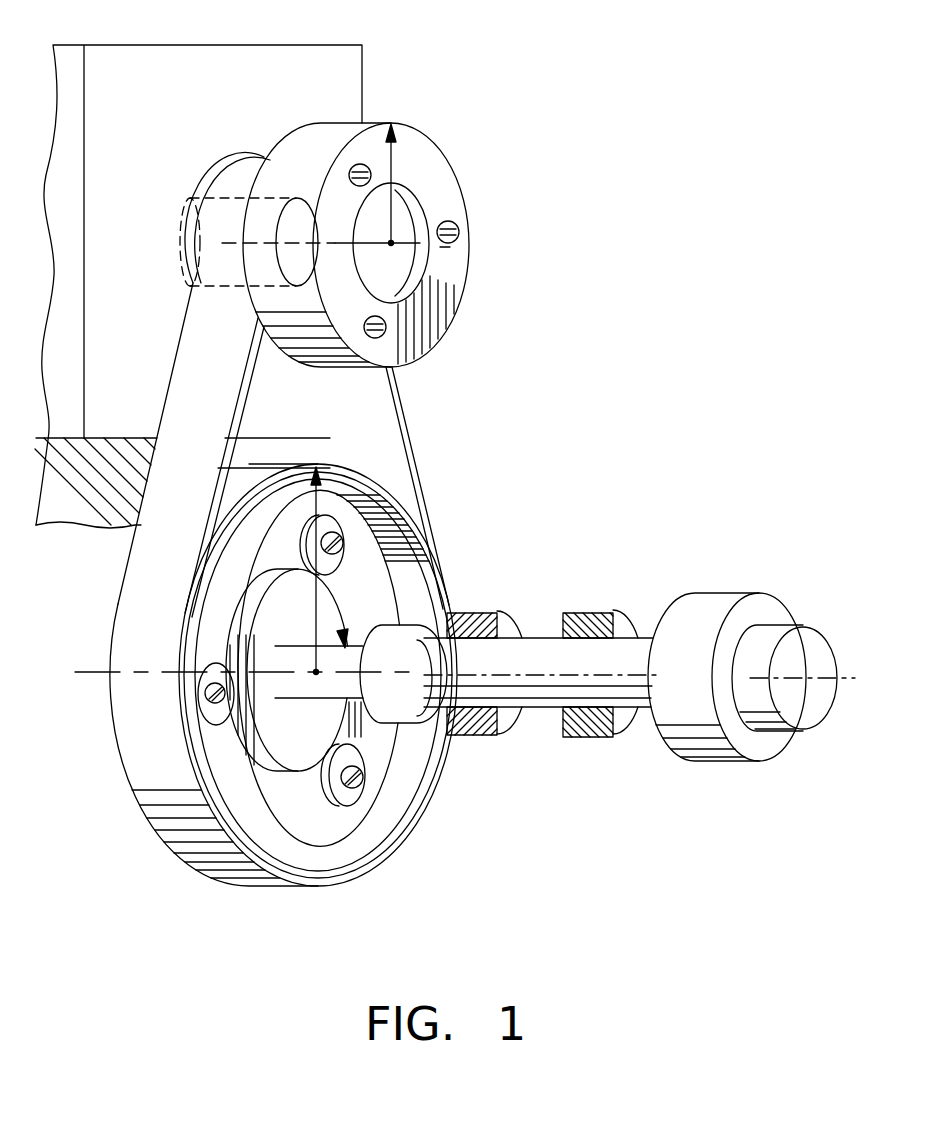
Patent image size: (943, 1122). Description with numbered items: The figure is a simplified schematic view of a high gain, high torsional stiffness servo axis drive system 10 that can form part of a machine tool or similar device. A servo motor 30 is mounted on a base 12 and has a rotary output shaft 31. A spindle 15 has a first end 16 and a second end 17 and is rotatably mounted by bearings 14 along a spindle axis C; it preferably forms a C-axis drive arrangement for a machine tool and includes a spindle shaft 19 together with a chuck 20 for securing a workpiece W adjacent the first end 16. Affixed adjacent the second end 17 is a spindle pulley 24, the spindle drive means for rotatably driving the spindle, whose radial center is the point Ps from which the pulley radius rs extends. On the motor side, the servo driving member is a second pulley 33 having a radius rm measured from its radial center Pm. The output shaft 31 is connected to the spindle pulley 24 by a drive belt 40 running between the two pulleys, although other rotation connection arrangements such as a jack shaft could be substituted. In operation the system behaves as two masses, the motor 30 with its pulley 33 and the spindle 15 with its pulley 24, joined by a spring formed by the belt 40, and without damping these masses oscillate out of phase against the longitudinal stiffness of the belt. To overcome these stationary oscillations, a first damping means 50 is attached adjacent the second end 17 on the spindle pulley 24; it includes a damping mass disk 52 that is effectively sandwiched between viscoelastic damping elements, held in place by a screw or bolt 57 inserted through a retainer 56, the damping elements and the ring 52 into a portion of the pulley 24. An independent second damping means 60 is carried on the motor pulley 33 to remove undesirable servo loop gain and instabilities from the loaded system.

The servo axis drive system 10 is at (530, 514).
The base 12 is at (112, 517).
The bearings 14 is at (486, 736).
The spindle 15 is at (544, 745).
The first end 16 is at (648, 598).
The second end 17 is at (343, 625).
The spindle shaft 19 is at (541, 643).
The chuck 20 is at (712, 757).
The spindle pulley 24 is at (348, 857).
The servo motor 30 is at (157, 50).
The rotary output shaft 31 is at (182, 245).
The second pulley 33 is at (213, 176).
The drive belt 40 is at (380, 448).
The first damping means 50 is at (366, 830).
The damping mass disk 52 is at (215, 752).
The retainer 56 is at (335, 790).
The screw or bolt 57 is at (226, 695).
The second damping means 60 is at (478, 208).
The workpiece W is at (808, 713).
The spindle axis C is at (817, 677).
The radius of second pulley rm is at (394, 162).
The radial center of second pulley Pm is at (391, 243).
The radius of spindle pulley rs is at (308, 527).
The radial center of spindle pulley Ps is at (311, 673).